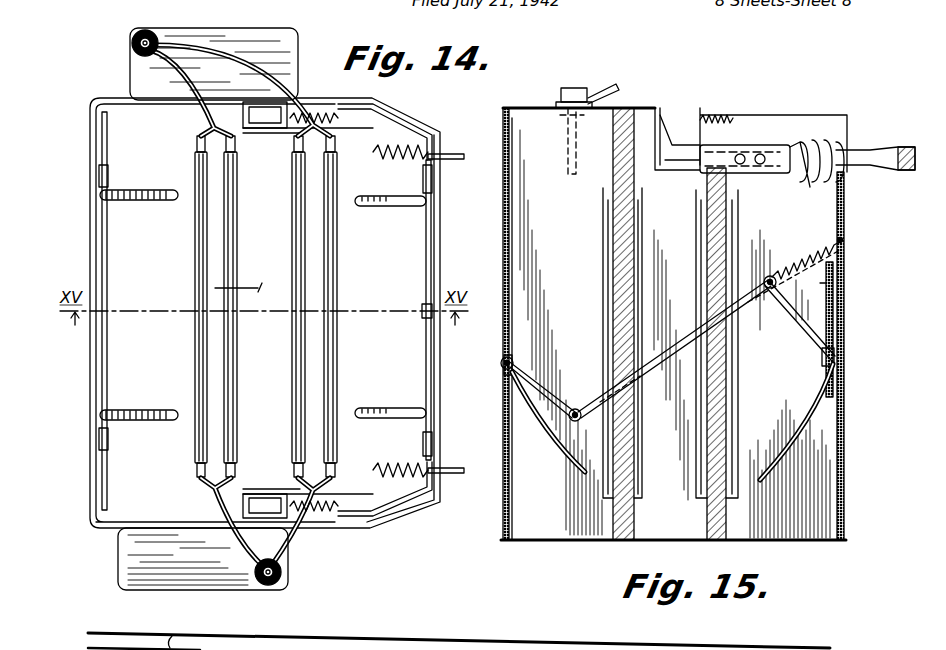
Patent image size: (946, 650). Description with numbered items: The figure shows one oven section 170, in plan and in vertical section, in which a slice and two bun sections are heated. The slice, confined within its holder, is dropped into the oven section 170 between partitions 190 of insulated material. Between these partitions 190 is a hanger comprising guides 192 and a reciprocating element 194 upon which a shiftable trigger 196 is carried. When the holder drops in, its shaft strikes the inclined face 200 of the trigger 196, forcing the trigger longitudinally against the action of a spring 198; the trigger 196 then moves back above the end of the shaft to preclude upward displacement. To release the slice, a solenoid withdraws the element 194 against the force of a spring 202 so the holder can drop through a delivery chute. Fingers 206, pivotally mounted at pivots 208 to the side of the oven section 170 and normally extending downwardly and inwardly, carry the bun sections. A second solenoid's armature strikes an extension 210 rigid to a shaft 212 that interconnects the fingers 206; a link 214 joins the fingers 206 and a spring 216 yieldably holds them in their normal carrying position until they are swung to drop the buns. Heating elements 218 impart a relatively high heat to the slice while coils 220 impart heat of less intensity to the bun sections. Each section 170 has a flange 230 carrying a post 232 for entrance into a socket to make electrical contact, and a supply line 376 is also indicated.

In FIG. 14, the oven section 170 is at (432, 260).
In FIG. 15, the oven section 170 is at (846, 198).
In FIG. 14, the partitions of insulated material 190 is at (292, 288).
In FIG. 15, the partitions of insulated material 190 is at (636, 140).
In FIG. 14, the guides 192 is at (288, 104).
In FIG. 15, the guides 192 is at (676, 112).
In FIG. 14, the reciprocating element 194 is at (458, 153).
In FIG. 15, the reciprocating element 194 is at (862, 150).
In FIG. 14, the trigger 196 is at (262, 128).
In FIG. 15, the trigger 196 is at (716, 118).
In FIG. 15, the spring 198 is at (748, 122).
In FIG. 14, the inclined face 200 is at (270, 150).
In FIG. 15, the inclined face 200 is at (672, 132).
In FIG. 14, the spring 202 is at (400, 163).
In FIG. 15, the spring 202 is at (818, 180).
In FIG. 14, the fingers 206 is at (146, 201).
In FIG. 15, the fingers 206 is at (548, 434).
In FIG. 14, the pivot 208 is at (108, 182).
In FIG. 15, the pivot 208 is at (503, 364).
In FIG. 14, the extension 210 is at (422, 308).
In FIG. 15, the extension 210 is at (833, 287).
In FIG. 14, the shaft 212 is at (107, 348).
In FIG. 15, the shaft 212 is at (836, 374).
In FIG. 15, the link 214 is at (703, 326).
In FIG. 15, the spring 216 is at (810, 262).
In FIG. 14, the heating elements 218 is at (292, 353).
In FIG. 15, the heating elements 218 is at (707, 478).
In FIG. 14, the coils 220 is at (194, 288).
In FIG. 15, the coils 220 is at (602, 352).
In FIG. 14, the flange 230 is at (275, 46).
In FIG. 15, the flange 230 is at (567, 130).
In FIG. 14, the post 232 is at (282, 572).
In FIG. 15, the post 232 is at (569, 176).
In FIG. 14, the line 376 is at (112, 632).